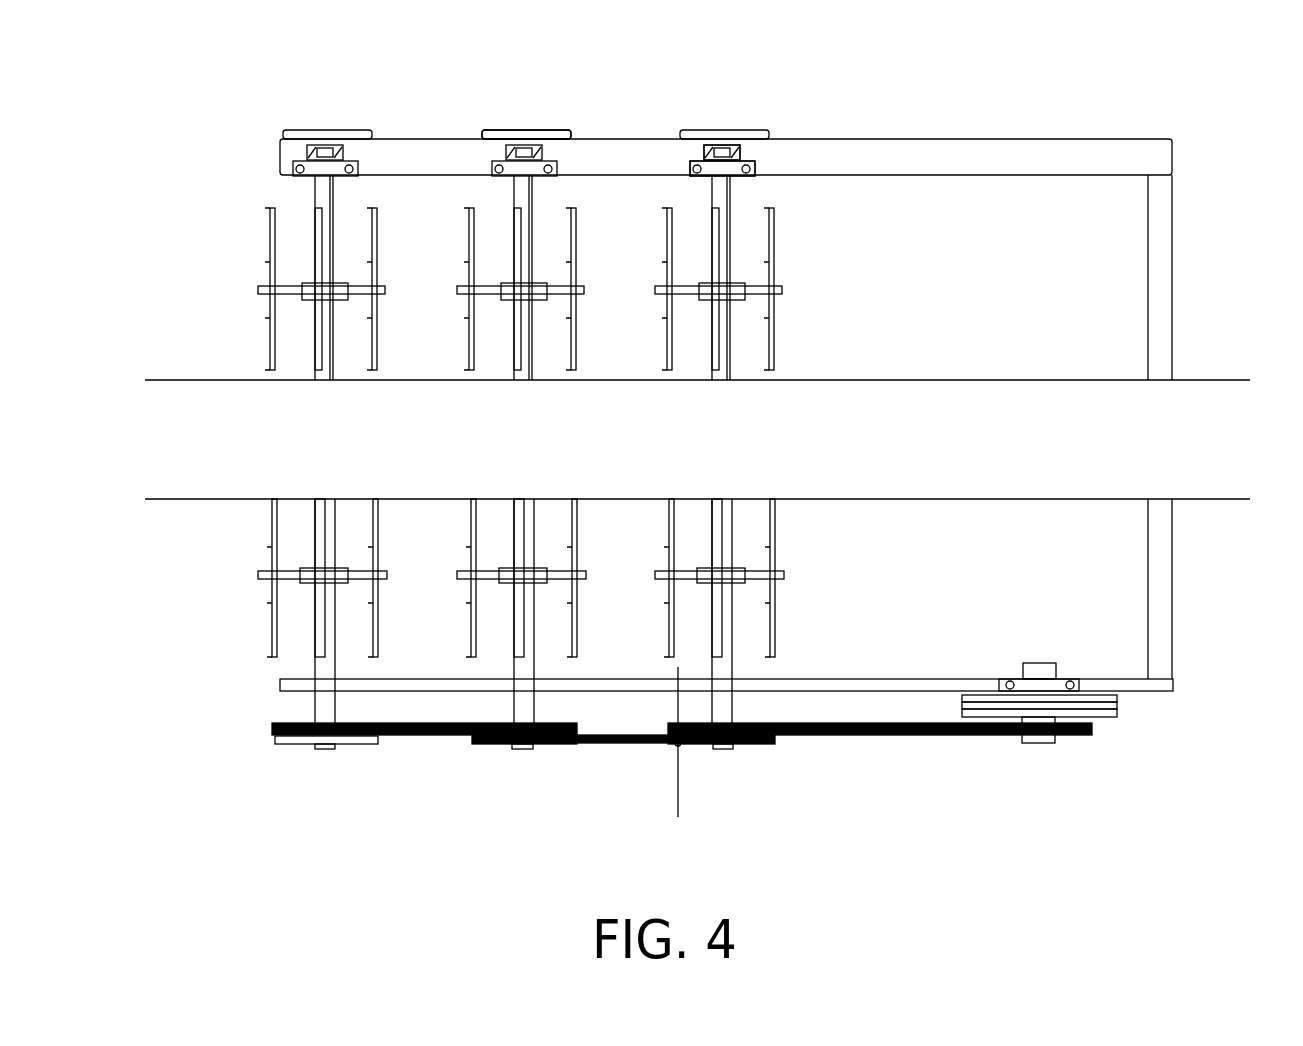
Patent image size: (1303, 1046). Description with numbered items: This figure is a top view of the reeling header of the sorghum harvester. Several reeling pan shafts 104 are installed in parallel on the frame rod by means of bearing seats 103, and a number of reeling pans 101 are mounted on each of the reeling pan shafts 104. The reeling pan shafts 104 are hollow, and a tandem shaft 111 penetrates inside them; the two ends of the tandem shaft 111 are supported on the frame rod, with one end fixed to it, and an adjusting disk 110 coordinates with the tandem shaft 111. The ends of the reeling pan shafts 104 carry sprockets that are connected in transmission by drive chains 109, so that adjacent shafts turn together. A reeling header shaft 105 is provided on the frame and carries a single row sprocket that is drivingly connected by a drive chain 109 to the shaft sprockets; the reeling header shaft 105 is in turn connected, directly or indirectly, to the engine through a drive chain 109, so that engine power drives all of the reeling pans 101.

The reeling pan 101 is at (302, 285).
The bearing seat 103 is at (327, 687).
The reeling pan shaft 104 is at (325, 193).
The reeling header shaft 105 is at (1042, 669).
The drive chain 109 is at (593, 742).
The adjusting disk 110 is at (640, 95).
The tandem shaft 111 is at (720, 163).